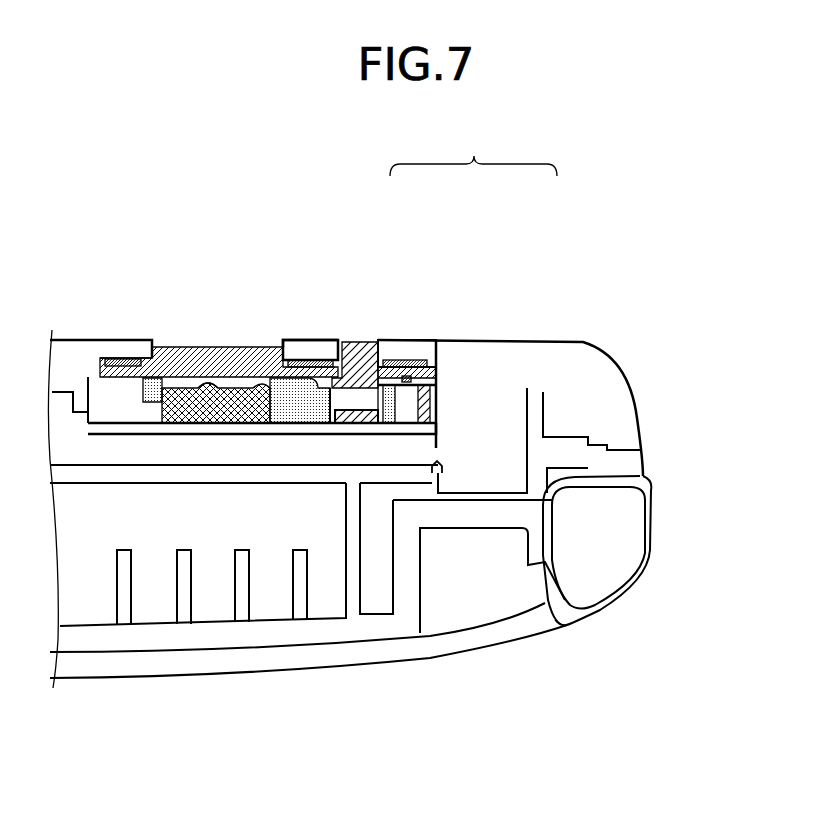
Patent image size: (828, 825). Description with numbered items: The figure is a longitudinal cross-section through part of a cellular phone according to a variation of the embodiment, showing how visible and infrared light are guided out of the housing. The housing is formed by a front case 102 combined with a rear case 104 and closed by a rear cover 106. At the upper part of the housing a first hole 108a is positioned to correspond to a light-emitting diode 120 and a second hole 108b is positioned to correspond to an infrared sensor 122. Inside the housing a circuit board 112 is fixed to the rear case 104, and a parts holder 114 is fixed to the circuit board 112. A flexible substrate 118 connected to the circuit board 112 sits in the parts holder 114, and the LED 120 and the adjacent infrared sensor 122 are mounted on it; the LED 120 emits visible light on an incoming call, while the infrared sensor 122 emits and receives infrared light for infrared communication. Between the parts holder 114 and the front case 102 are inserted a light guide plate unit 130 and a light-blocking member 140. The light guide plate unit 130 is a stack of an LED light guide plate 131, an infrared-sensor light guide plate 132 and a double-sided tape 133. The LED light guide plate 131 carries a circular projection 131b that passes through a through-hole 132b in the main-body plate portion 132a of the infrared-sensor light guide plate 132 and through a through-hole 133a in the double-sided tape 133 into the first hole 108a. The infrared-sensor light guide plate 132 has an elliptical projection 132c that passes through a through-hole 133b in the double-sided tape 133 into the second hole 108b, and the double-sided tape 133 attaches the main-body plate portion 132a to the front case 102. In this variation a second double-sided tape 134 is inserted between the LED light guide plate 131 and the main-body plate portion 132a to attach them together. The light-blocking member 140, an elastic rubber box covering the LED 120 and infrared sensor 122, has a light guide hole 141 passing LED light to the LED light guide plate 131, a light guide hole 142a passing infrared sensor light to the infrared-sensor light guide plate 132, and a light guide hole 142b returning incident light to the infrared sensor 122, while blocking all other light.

The front case 102 is at (579, 349).
The rear case 104 is at (650, 469).
The rear cover 106 is at (571, 626).
The first hole 108a is at (342, 345).
The second hole 108b is at (160, 344).
The circuit board 112 is at (425, 474).
The parts holder 114 is at (425, 452).
The flexible substrate 118 is at (420, 427).
The light-emitting diode (LED) 120 is at (368, 425).
The infrared sensor 122 is at (212, 400).
The light guide plate unit 130 is at (473, 151).
The LED light guide plate 131 is at (405, 372).
The projection 131b is at (372, 338).
The infrared-sensor light guide plate 132 is at (262, 335).
The main-body plate portion 132a is at (103, 363).
The through-hole 132b is at (430, 366).
The projection 132c is at (218, 346).
The double-sided tape 133 is at (425, 352).
The through-hole 133a is at (352, 347).
The through-hole 133b is at (107, 371).
The double-sided tape 134 is at (410, 380).
The light-blocking member 140 is at (298, 408).
The light guide hole 141 is at (357, 425).
The light guide hole 142a is at (189, 402).
The light guide hole 142b is at (258, 400).